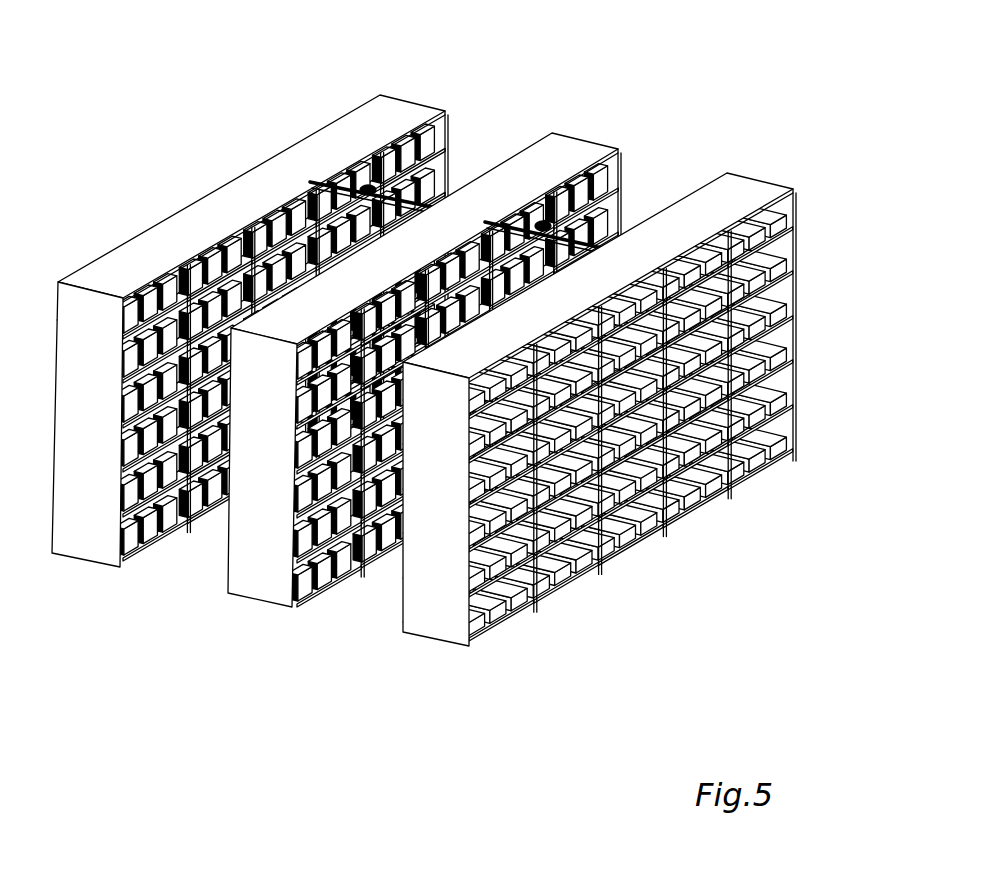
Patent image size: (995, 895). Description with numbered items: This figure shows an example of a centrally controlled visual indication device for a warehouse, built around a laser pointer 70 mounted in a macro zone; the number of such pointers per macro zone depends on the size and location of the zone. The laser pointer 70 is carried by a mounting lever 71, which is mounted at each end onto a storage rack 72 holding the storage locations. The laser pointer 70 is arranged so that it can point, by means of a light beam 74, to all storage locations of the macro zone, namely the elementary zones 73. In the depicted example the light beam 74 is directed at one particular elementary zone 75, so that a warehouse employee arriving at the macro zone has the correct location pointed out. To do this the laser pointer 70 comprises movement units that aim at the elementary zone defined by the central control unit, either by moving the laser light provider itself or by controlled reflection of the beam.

The laser pointer 70 is at (599, 147).
The mounting lever 71 is at (499, 207).
The storage rack 72 is at (440, 385).
The elementary zones 73 is at (393, 133).
The light beam 74 is at (468, 228).
The elementary zone 75 is at (388, 525).